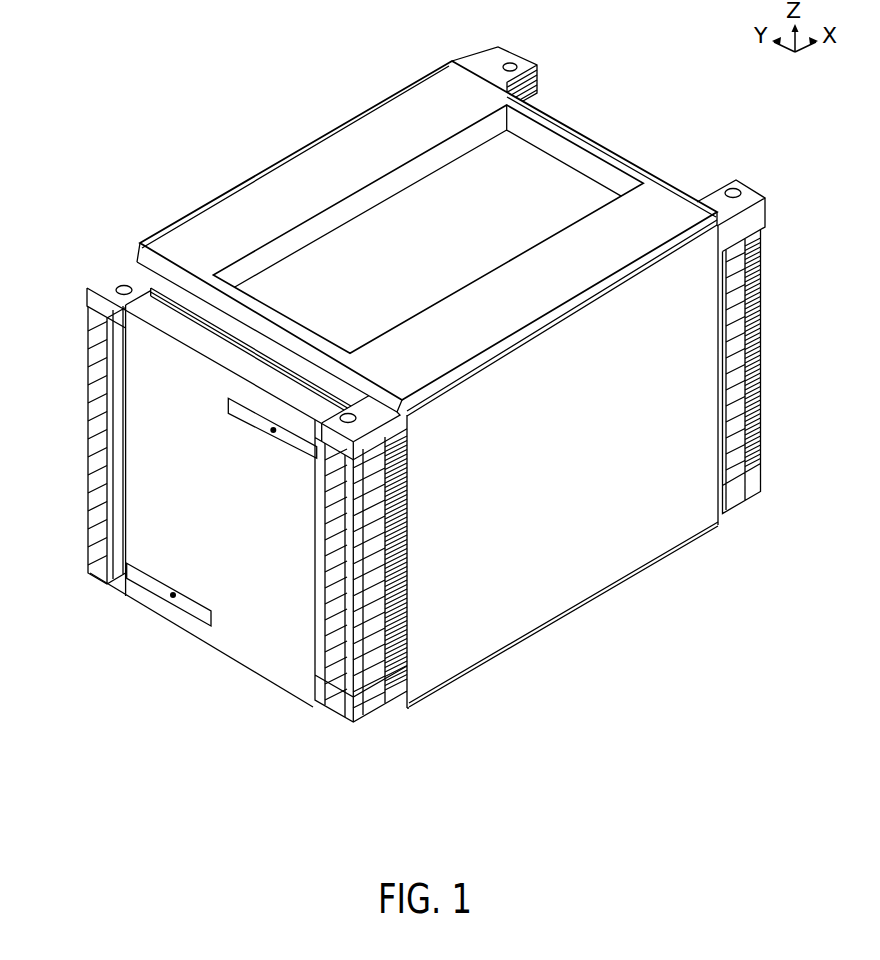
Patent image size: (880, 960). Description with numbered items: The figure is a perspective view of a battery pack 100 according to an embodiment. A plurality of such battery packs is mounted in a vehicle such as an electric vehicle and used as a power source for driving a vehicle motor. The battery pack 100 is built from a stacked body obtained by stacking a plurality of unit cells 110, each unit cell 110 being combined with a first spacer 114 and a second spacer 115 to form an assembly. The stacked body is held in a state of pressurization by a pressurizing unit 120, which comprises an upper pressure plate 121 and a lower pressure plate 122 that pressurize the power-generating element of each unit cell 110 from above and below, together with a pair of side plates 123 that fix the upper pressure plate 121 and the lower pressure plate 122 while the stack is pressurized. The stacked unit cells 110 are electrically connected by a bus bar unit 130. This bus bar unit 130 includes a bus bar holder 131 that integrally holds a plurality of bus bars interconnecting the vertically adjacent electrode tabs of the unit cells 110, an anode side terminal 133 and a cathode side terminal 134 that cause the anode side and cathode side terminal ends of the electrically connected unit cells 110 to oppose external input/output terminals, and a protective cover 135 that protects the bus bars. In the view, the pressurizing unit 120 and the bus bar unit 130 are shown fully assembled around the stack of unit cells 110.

The battery pack 100 is at (63, 33).
The unit cell 110 is at (406, 573).
The first spacer 114 is at (408, 698).
The second spacer 115 is at (733, 443).
The pressurizing unit 120 is at (541, 504).
The upper pressure plate 121 is at (406, 459).
The lower pressure plate 122 is at (368, 700).
The side plate 123 is at (627, 505).
The bus bar unit 130 is at (145, 530).
The bus bar holder 131 is at (318, 621).
The anode side terminal 133 is at (287, 437).
The cathode side terminal 134 is at (190, 606).
The protective cover 135 is at (262, 609).